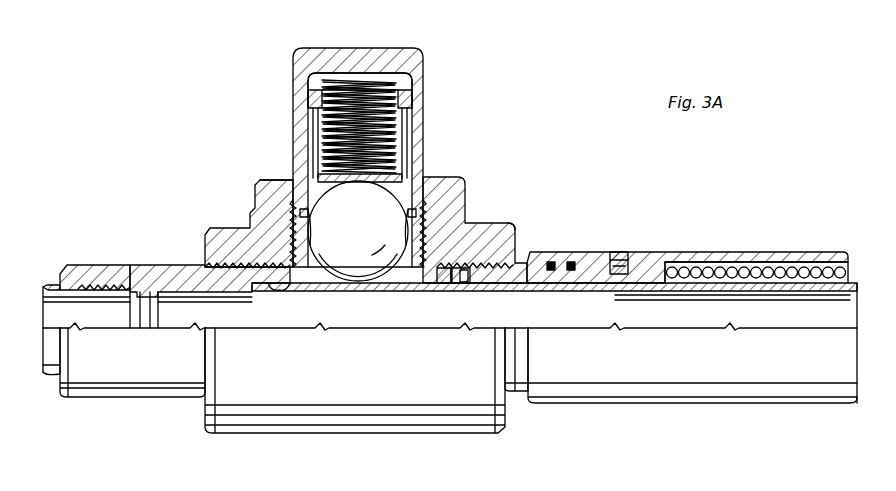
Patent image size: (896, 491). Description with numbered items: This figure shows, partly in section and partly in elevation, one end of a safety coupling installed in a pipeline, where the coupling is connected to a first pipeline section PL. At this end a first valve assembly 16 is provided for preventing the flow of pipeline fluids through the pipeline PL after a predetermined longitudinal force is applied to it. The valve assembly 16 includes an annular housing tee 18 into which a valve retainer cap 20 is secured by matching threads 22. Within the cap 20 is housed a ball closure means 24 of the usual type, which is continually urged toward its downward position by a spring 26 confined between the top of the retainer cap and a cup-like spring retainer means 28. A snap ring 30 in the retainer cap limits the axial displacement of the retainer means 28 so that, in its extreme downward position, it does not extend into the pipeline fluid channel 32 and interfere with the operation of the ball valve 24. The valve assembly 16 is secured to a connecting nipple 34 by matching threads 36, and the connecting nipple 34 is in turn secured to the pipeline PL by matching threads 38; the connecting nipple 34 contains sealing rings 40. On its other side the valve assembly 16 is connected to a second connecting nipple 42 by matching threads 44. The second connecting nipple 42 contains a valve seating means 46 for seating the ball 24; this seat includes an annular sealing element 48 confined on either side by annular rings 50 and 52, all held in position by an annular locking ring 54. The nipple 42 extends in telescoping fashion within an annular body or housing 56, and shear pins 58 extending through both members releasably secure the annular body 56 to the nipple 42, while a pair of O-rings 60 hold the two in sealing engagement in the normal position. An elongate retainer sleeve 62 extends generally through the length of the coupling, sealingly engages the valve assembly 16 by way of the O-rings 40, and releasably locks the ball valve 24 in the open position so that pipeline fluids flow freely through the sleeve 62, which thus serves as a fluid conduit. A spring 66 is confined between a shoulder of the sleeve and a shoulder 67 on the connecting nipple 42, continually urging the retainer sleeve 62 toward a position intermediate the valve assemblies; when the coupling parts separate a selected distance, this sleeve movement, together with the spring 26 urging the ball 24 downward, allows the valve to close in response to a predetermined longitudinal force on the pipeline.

The first valve means or assembly 16 is at (286, 72).
The annular housing tee 18 is at (461, 200).
The valve retainer cap 20 is at (425, 60).
The threads 22 is at (428, 205).
The ball closure means 24 is at (361, 239).
The spring 26 is at (358, 85).
The cup-like spring retainer means 28 is at (400, 100).
The snap ring 30 is at (308, 215).
The pipeline fluid channel 32 is at (360, 326).
The connecting nipple 34 is at (173, 262).
The threads 36 is at (237, 250).
The threads 38 is at (124, 280).
The sealing rings 40 is at (274, 290).
The second connecting nipple 42 is at (572, 262).
The threads 44 is at (483, 252).
The valve seating means 46 is at (468, 289).
The annular sealing element 48 is at (447, 298).
The annular ring 50 is at (455, 290).
The annular ring 52 is at (447, 290).
The annular locking ring 54 is at (432, 286).
The annular body or housing 56 is at (672, 253).
The shear pins 58 is at (618, 252).
The O-rings 60 is at (552, 262).
The elongate retainer sleeve 62 is at (556, 290).
The spring 66 is at (757, 262).
The shoulder 67 is at (693, 263).
The first pipeline section PL is at (47, 287).